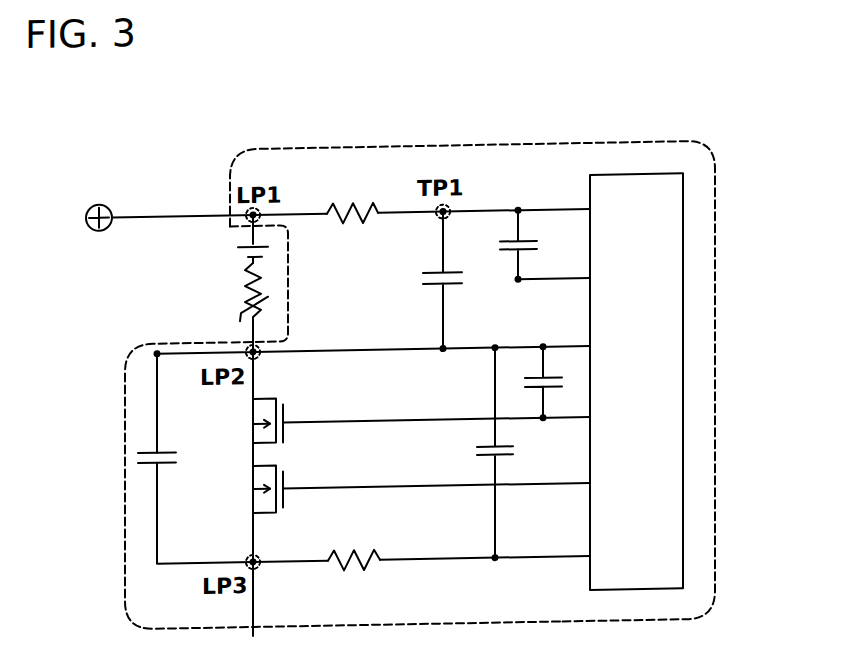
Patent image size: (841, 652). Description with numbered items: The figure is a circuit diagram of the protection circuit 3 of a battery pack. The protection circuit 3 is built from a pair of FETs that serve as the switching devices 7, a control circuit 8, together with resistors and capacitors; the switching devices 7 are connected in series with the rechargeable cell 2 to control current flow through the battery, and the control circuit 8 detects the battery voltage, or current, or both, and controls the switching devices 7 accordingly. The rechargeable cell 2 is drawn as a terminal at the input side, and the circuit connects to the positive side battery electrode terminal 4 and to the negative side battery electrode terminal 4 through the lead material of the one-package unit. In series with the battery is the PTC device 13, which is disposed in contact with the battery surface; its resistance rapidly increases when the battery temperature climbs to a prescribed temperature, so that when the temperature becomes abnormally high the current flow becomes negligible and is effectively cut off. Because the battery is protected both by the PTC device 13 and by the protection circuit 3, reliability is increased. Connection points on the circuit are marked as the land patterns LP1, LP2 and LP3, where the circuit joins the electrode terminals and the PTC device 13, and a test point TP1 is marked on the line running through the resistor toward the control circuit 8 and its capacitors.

The rechargeable cell 2 is at (240, 248).
The protection circuit 3 is at (343, 149).
The battery electrode terminal 4 is at (108, 205).
The switching devices 7 is at (301, 402).
The control circuit 8 is at (590, 313).
The PTC device 13 is at (230, 308).
The land pattern 1 LP1 is at (258, 202).
The land pattern 2 LP2 is at (230, 367).
The land pattern 3 LP3 is at (231, 577).
The test point 1 TP1 is at (440, 197).